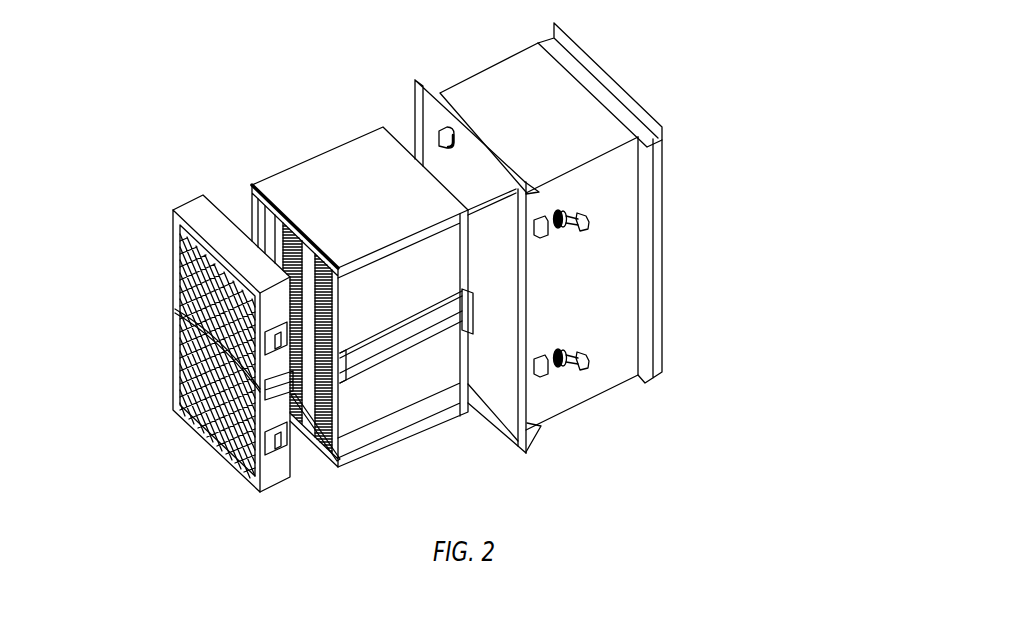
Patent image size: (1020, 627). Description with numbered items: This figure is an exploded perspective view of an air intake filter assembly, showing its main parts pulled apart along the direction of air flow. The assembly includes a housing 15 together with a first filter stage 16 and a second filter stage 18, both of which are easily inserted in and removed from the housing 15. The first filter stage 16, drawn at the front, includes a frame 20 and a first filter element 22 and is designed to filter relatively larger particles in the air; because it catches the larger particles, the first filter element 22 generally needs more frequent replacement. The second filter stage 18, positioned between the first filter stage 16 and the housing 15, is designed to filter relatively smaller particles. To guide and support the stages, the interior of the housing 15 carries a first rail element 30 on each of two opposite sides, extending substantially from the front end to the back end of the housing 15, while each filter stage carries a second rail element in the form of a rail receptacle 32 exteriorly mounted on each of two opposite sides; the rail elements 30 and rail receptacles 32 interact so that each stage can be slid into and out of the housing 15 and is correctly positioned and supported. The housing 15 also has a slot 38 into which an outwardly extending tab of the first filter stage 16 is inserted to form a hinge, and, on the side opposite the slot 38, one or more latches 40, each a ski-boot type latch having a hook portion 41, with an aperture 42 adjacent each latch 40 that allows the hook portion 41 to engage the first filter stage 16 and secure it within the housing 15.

The housing 15 is at (497, 66).
The first filter stage 16 is at (196, 198).
The second filter stage 18 is at (343, 143).
The frame 20 is at (175, 253).
The first filter element 22 is at (193, 350).
The first rail element 30 is at (478, 197).
The rail receptacle 32 is at (428, 325).
The slot 38 is at (437, 139).
The latch 40 is at (573, 212).
The hook portion 41 is at (581, 228).
The aperture 42 is at (546, 233).